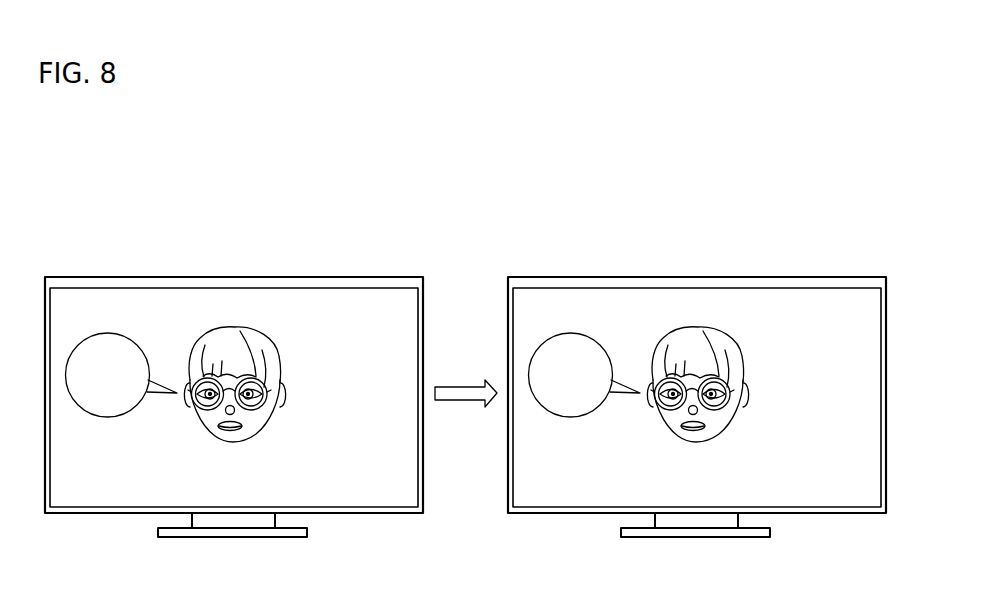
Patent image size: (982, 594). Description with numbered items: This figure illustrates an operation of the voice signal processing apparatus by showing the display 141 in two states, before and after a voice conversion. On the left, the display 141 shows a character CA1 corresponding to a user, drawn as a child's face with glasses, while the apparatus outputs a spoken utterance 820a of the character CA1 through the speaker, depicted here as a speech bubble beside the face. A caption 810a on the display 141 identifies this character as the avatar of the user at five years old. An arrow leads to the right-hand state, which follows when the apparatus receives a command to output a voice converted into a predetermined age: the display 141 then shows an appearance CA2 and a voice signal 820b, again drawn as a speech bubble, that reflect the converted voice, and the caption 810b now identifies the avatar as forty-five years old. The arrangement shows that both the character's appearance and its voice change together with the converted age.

The display 141 is at (93, 495).
The spoken utterance of the character 820a is at (108, 417).
The voice signal reflecting converted voice 820b is at (571, 417).
The character corresponding to a user CA1 is at (250, 334).
The appearance reflecting converted voice CA2 is at (735, 340).
The avatar description text (5 years old) 810a is at (368, 502).
The avatar description text (45 years old) 810b is at (820, 502).